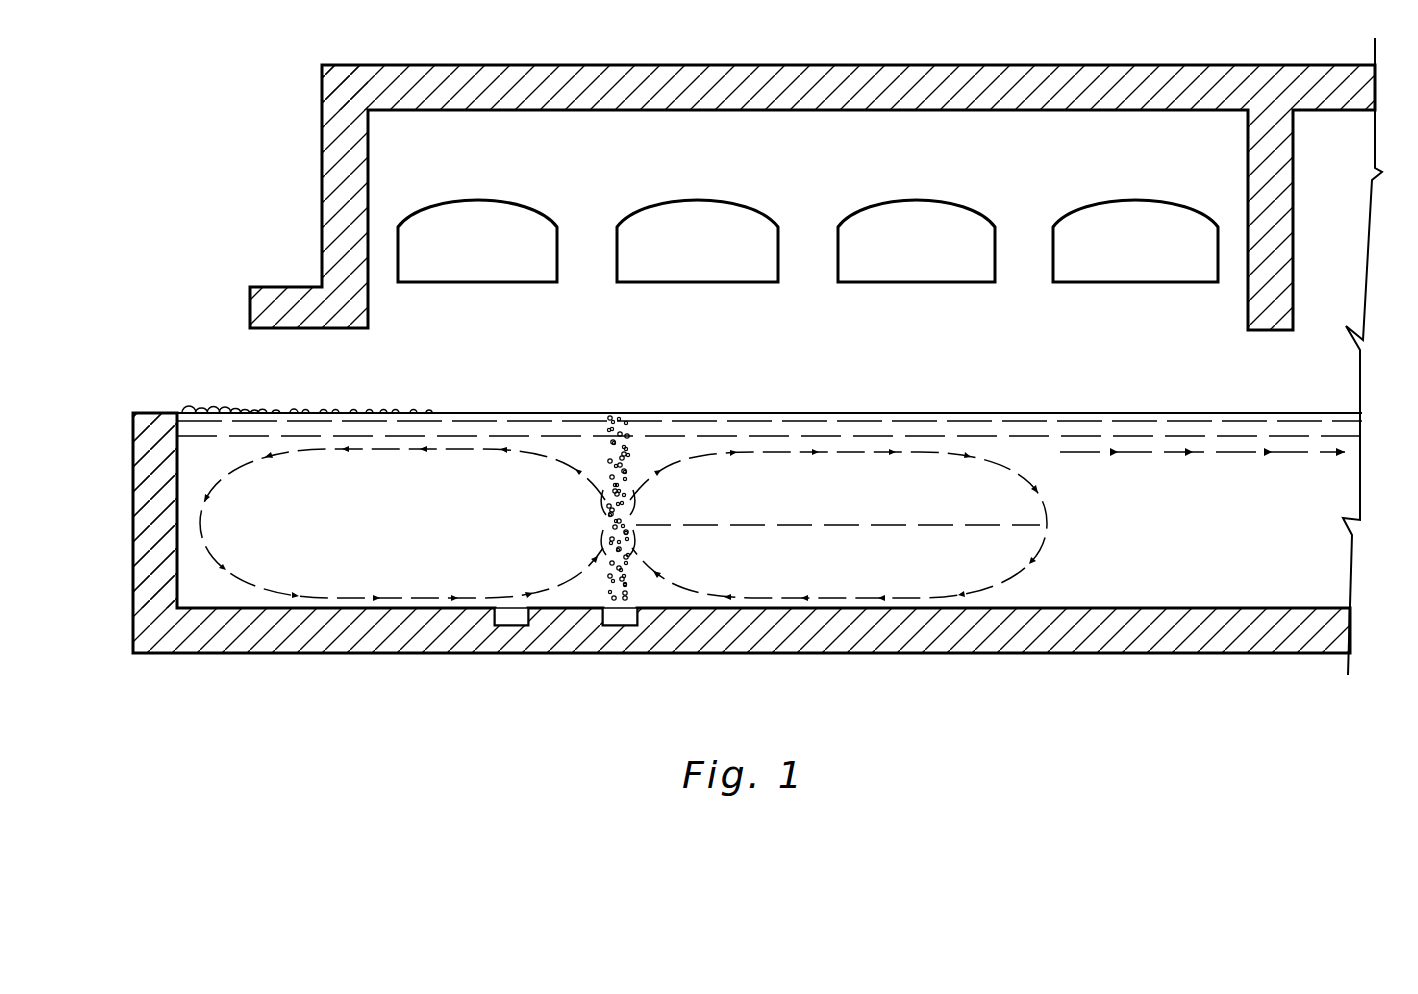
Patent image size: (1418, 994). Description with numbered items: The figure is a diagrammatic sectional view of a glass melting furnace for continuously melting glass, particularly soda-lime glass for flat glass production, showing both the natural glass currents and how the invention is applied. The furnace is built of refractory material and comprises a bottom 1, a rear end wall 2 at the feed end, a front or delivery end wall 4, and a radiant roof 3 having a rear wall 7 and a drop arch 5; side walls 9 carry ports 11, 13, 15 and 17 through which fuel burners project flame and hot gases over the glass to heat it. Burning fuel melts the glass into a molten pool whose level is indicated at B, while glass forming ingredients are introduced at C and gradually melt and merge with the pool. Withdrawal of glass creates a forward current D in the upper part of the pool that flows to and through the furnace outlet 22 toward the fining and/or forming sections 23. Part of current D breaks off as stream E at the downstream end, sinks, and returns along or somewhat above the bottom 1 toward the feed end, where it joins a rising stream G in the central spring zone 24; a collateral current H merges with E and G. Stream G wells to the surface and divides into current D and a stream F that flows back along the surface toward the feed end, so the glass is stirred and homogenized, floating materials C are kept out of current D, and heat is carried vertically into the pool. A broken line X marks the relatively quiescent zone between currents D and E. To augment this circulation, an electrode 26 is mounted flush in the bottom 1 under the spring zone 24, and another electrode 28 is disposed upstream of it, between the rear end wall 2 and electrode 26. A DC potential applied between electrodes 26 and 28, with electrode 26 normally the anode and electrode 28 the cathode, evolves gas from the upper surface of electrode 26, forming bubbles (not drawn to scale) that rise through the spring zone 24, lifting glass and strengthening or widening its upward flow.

The bottom 1 is at (953, 655).
The rear end wall 2 is at (133, 538).
The radiant roof 3 is at (613, 64).
The front or delivery end wall 4 is at (1360, 430).
The drop arch 5 is at (1293, 178).
The rear wall 7 is at (322, 173).
The side walls 9 is at (851, 157).
The port 11 is at (478, 200).
The port 13 is at (694, 201).
The port 15 is at (928, 201).
The port 17 is at (1150, 198).
The furnace outlet 22 is at (1255, 435).
The fining and/or forming sections 23 is at (1332, 304).
The spring zone 24 is at (636, 520).
The electrode 26 is at (625, 625).
The electrode 28 is at (505, 623).
The glass level B is at (540, 413).
The glass forming ingredients C is at (257, 412).
The glass flow current D is at (1093, 453).
The stream E is at (882, 597).
The stream F is at (557, 468).
The rising stream G is at (608, 517).
The collateral current H is at (285, 595).
The broken line X is at (822, 525).